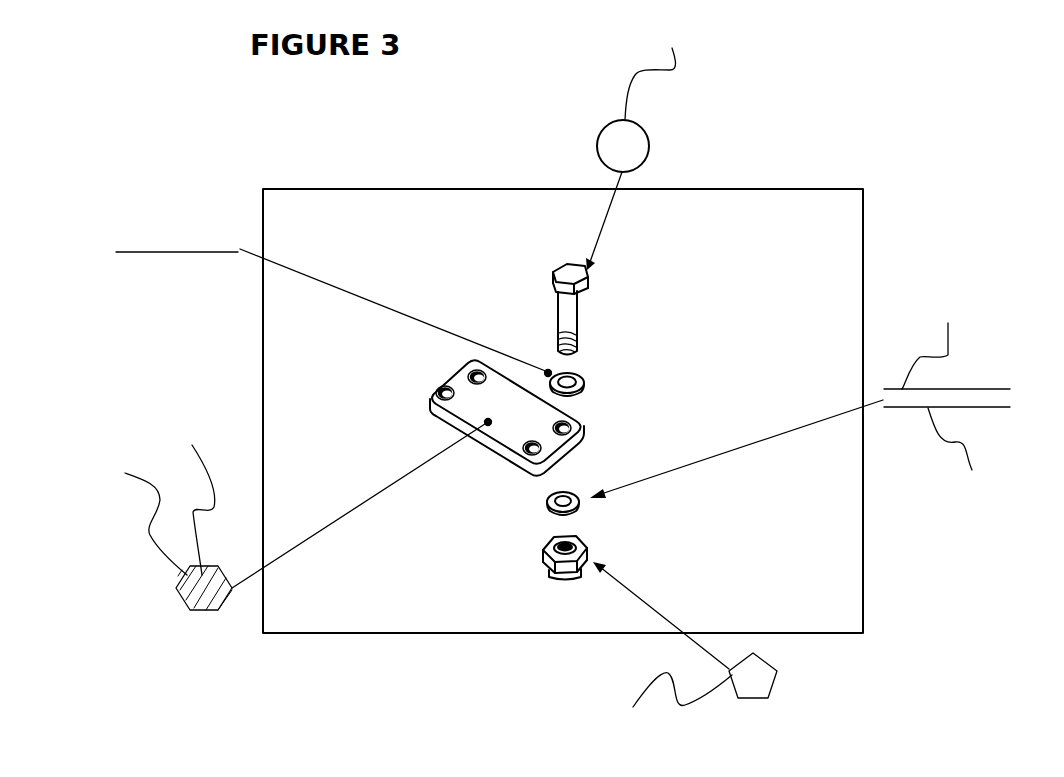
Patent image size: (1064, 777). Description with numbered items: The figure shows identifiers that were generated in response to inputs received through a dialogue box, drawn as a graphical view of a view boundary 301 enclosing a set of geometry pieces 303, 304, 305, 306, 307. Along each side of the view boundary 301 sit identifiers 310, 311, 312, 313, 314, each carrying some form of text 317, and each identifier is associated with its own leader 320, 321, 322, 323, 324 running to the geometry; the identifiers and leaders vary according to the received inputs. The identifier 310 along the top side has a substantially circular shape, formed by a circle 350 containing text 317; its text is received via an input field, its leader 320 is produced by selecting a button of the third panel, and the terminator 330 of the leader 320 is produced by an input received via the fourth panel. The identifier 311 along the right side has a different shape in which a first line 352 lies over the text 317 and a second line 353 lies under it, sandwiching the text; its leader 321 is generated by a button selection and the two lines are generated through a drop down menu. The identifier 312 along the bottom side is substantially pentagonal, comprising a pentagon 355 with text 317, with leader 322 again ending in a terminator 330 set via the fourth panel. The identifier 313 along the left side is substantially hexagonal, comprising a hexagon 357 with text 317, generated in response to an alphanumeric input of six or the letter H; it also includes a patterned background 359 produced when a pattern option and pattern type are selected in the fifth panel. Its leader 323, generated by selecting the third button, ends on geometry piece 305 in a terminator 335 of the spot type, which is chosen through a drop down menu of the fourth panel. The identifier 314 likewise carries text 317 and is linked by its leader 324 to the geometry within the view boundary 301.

The view boundary 301 is at (863, 242).
The geometry piece 303 is at (588, 281).
The geometry piece 304 is at (586, 378).
The geometry piece 305 is at (586, 440).
The geometry piece 306 is at (548, 515).
The geometry piece 307 is at (542, 567).
The identifier 310 is at (652, 119).
The identifier 311 is at (967, 370).
The identifier 312 is at (786, 694).
The identifier 313 is at (174, 612).
The identifier 314 is at (95, 257).
The text 317 is at (600, 142).
The leader 320 is at (610, 213).
The leader 321 is at (757, 435).
The leader 322 is at (672, 615).
The leader 323 is at (340, 518).
The leader 324 is at (335, 280).
The terminator 330 is at (587, 267).
The terminator 335 is at (546, 370).
The circle 350 is at (655, 72).
The first line 352 is at (930, 343).
The second line 353 is at (960, 451).
The pentagon 355 is at (673, 702).
The hexagon 357 is at (138, 511).
The background 359 is at (189, 497).